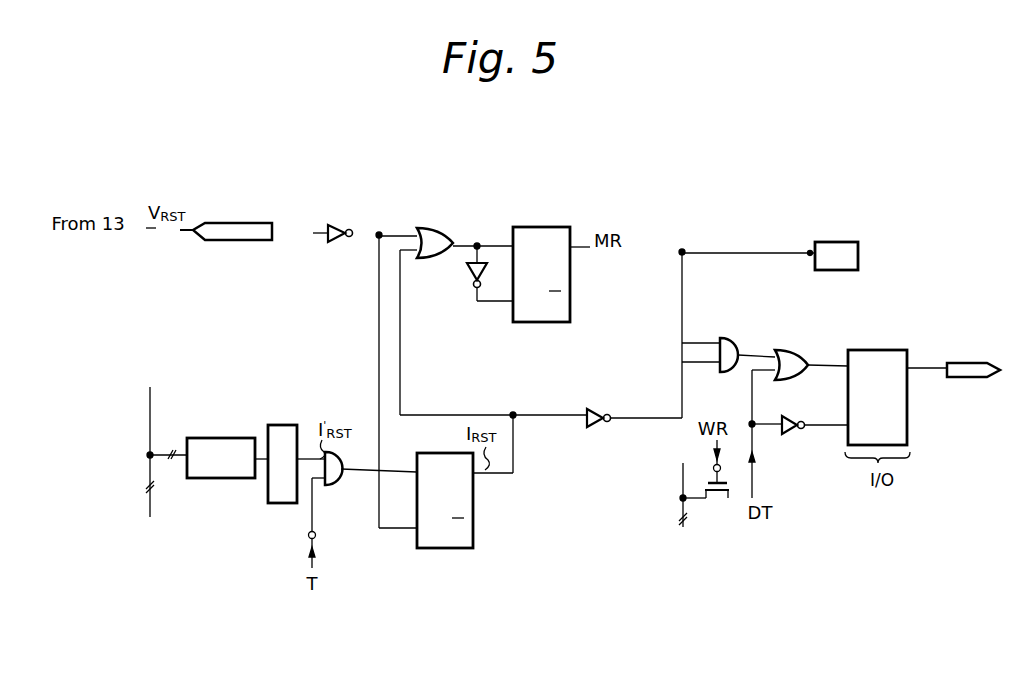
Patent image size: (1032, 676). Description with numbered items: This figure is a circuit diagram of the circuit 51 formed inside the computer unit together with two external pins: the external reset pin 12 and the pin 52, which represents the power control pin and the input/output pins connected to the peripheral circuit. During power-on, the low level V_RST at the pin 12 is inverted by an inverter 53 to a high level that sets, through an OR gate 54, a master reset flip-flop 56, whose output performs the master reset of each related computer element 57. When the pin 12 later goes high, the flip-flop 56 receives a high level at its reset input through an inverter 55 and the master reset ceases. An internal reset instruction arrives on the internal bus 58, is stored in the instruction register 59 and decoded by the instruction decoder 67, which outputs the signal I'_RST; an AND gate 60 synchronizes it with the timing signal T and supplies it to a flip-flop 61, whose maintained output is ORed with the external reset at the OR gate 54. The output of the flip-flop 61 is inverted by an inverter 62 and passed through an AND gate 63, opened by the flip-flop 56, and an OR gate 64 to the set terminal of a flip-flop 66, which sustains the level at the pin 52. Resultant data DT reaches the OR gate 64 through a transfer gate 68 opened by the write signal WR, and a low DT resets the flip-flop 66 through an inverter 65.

The external reset pin 12 is at (240, 223).
The circuit 51 is at (506, 181).
The pin 52 is at (976, 363).
The inverter 53 is at (338, 223).
The OR gate 54 is at (437, 228).
The inverter 55 is at (464, 278).
The master reset flip-flop 56 is at (550, 227).
The related computer element 57 is at (835, 242).
The internal bus 58 is at (152, 517).
The instruction register 59 is at (220, 478).
The AND gate 60 is at (336, 482).
The flip-flop 61 is at (473, 520).
The inverter 62 is at (596, 425).
The AND gate 63 is at (735, 338).
The OR gate 64 is at (798, 350).
The inverter 65 is at (790, 432).
The flip-flop 66 is at (882, 350).
The instruction decoder 67 is at (285, 425).
The transfer gate 68 is at (714, 498).